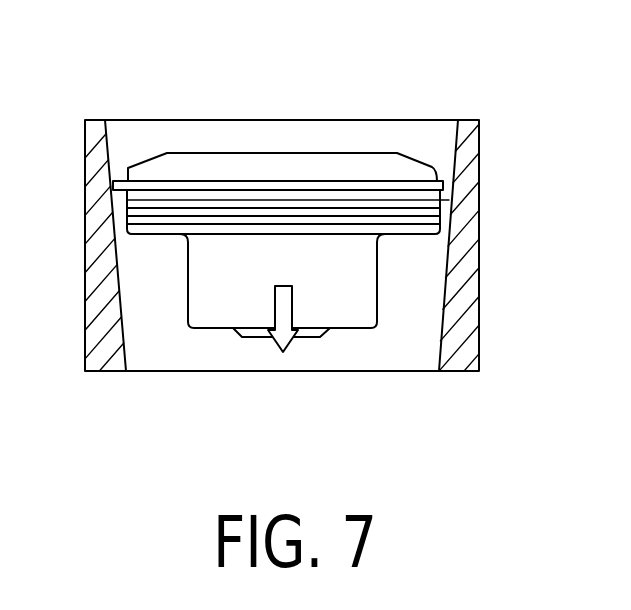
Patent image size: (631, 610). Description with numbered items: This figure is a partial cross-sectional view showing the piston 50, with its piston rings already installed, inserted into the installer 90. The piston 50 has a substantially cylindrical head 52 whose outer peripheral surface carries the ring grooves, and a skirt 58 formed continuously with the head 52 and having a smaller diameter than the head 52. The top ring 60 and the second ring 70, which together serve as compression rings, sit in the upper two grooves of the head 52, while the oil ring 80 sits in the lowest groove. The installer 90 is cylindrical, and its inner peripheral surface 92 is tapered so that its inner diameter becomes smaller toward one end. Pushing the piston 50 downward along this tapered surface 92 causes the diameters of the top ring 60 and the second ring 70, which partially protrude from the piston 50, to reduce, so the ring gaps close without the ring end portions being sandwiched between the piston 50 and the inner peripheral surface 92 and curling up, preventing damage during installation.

The piston 50 is at (315, 153).
The head 52 is at (188, 152).
The skirt 58 is at (188, 300).
The top ring 60 is at (120, 180).
The second ring 70 is at (448, 200).
The oil ring 80 is at (207, 226).
The installer 90 is at (483, 142).
The inner peripheral surface 92 is at (438, 310).